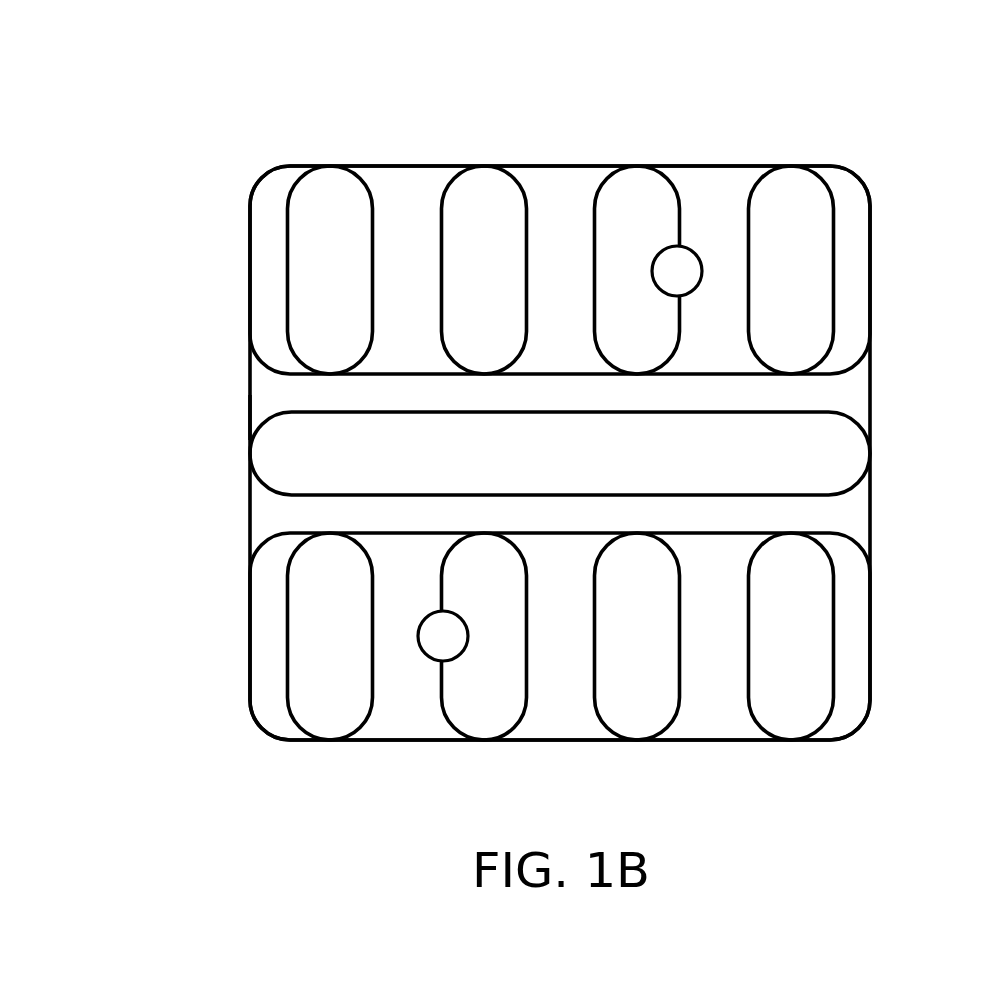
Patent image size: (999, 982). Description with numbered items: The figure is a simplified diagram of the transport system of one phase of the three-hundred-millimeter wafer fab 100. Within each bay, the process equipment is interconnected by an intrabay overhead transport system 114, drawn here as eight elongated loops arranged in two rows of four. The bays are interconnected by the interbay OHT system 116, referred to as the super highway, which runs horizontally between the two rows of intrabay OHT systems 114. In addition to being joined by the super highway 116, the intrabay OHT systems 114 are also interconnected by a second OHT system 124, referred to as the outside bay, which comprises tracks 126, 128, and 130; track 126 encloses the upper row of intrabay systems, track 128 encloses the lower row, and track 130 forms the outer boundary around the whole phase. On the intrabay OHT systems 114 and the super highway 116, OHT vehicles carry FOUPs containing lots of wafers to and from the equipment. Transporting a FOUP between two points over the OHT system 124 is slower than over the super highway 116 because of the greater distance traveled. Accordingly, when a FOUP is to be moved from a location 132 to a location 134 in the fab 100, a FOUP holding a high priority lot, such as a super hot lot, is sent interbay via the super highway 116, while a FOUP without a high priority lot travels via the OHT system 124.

The fab 100 is at (298, 116).
The intrabay overhead transport system 114 is at (350, 194).
The interbay OHT system 116 is at (851, 414).
The second OHT system 124 is at (250, 417).
The track 126 is at (250, 368).
The track 128 is at (852, 541).
The track 130 is at (250, 517).
The location 132 is at (432, 660).
The location 134 is at (697, 255).